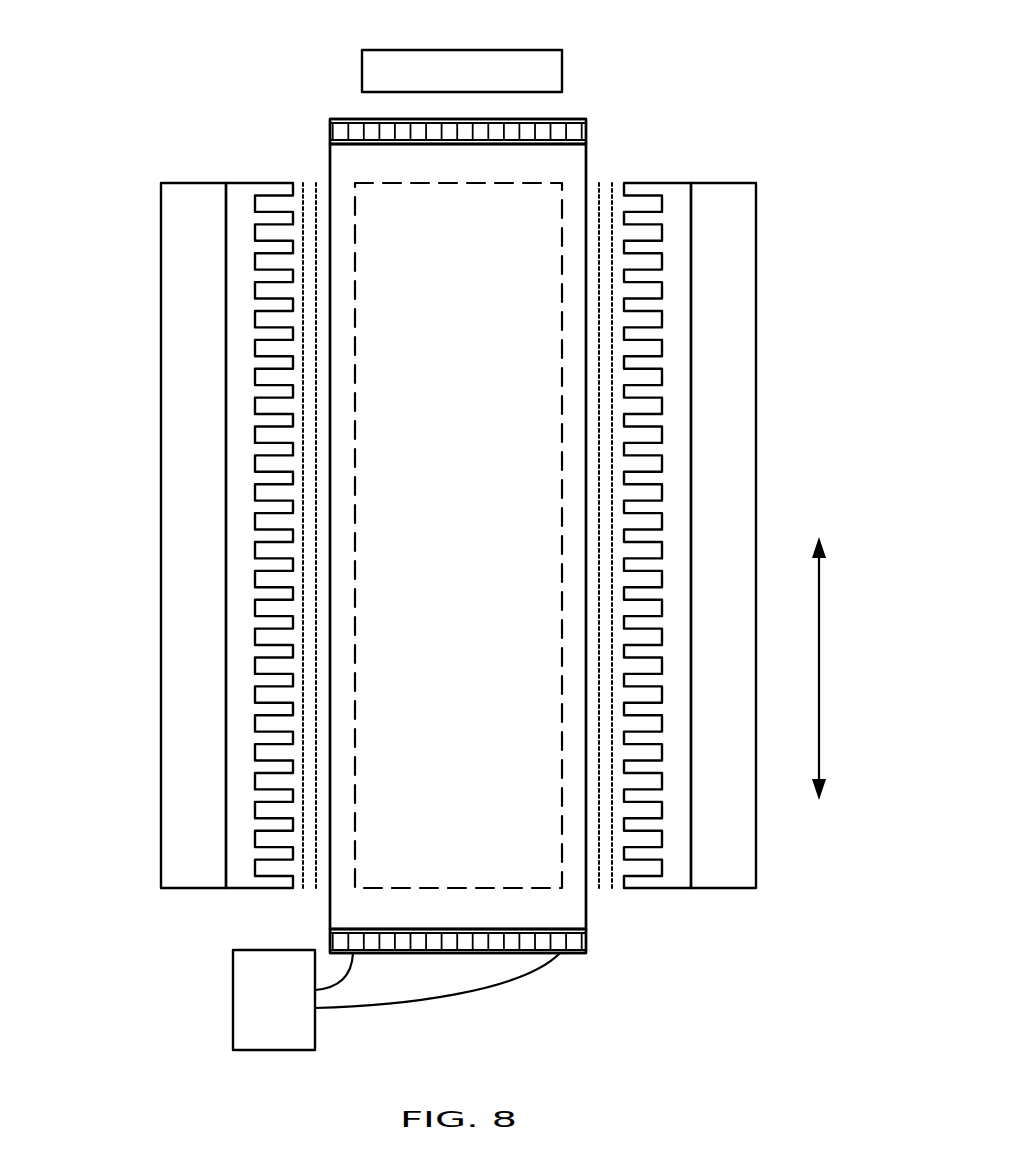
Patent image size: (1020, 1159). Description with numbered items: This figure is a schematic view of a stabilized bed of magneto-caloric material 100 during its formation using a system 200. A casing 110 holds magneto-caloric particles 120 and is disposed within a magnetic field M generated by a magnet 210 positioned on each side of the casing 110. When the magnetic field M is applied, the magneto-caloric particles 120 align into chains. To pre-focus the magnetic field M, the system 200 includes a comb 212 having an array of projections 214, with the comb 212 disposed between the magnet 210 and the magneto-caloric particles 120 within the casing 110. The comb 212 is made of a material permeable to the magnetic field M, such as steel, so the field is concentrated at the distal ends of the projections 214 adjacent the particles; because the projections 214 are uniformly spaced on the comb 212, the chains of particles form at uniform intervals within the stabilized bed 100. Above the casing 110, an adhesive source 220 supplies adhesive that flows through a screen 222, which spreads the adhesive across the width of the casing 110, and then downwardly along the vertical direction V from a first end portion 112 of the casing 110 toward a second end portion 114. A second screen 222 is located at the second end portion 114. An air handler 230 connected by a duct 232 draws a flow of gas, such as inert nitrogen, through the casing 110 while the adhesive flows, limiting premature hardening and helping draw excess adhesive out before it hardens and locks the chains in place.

The system 200 is at (176, 104).
The stabilized bed of magneto-caloric material 100 is at (600, 167).
The casing 110 is at (330, 367).
The first end portion 112 is at (330, 157).
The second end portion 114 is at (588, 910).
The magneto-caloric particles 120 is at (355, 518).
The magnet 210 is at (817, 200).
The comb 212 is at (785, 127).
The projections 214 is at (802, 377).
The adhesive source 220 is at (562, 68).
The screen 222 is at (632, 1002).
The air handler 230 is at (233, 977).
The duct 232 is at (478, 1002).
The magnetic field M is at (302, 665).
The vertical direction V is at (819, 665).